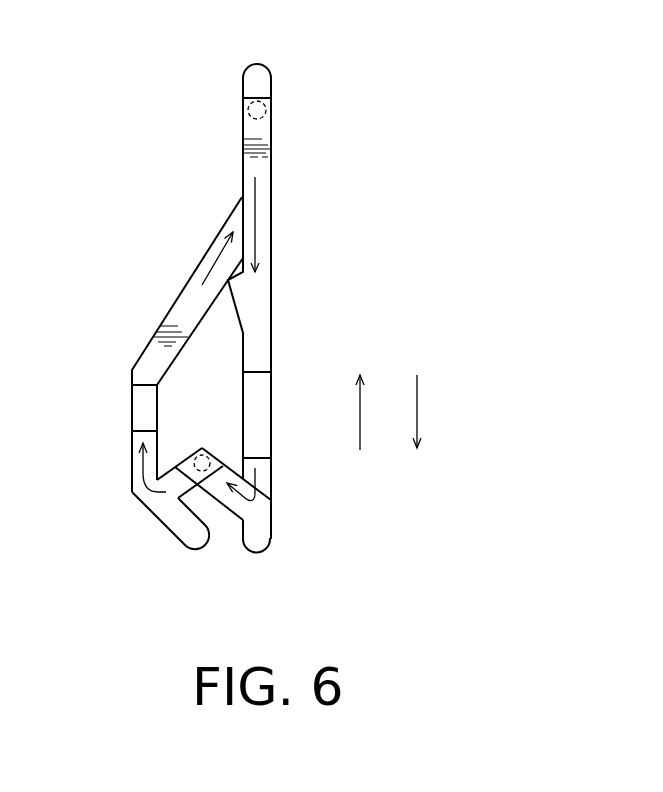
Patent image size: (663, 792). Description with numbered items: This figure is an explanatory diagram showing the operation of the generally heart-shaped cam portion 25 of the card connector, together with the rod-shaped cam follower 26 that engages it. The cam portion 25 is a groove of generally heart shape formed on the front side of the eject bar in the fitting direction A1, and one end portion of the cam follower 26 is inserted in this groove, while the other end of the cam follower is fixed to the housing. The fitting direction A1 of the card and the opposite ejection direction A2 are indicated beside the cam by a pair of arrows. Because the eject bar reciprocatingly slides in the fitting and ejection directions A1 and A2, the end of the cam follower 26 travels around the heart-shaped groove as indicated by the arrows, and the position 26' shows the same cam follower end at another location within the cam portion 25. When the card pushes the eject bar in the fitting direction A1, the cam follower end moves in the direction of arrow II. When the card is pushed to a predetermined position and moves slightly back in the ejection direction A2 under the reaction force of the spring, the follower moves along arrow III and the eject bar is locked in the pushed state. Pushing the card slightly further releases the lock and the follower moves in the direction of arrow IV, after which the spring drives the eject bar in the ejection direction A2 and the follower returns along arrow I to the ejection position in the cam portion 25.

The cam portion 25 is at (292, 208).
The cam follower 26 is at (304, 103).
The cam follower 26' is at (212, 426).
The arrow I is at (217, 260).
The arrow II is at (257, 235).
The arrow III is at (240, 500).
The arrow IV is at (142, 463).
The fitting direction A1 is at (417, 408).
The ejection direction A2 is at (360, 412).